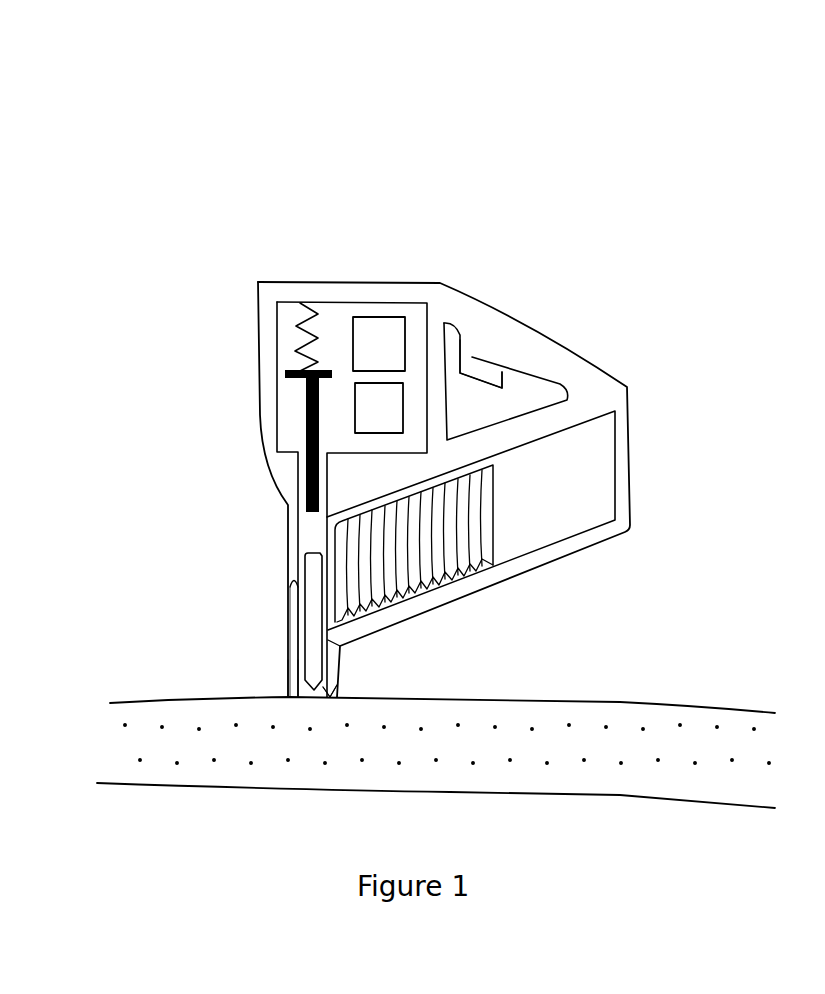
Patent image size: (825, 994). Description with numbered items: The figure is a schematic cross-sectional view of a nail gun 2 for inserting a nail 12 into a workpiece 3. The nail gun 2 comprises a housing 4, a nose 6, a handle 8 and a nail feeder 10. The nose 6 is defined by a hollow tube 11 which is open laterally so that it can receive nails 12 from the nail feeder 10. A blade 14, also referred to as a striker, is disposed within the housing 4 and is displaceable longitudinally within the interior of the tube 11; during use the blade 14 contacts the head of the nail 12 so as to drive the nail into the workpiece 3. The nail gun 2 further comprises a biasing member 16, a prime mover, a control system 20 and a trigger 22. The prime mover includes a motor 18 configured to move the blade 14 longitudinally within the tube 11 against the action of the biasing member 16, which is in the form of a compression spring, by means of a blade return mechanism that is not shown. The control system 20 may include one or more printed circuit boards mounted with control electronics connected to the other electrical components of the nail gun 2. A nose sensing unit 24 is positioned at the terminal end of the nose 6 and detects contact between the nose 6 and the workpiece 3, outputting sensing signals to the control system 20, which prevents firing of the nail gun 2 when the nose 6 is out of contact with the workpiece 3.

The nail gun 2 is at (192, 147).
The workpiece 3 is at (697, 742).
The housing 4 is at (280, 278).
The nose 6 is at (287, 662).
The handle 8 is at (532, 352).
The nail feeder 10 is at (548, 495).
The hollow tube 11 is at (287, 577).
The nail 12 is at (305, 600).
The blade 14 is at (305, 433).
The biasing member 16 is at (300, 332).
The motor 18 is at (372, 410).
The control system 20 is at (378, 333).
The trigger 22 is at (475, 372).
The nose sensing unit 24 is at (340, 670).